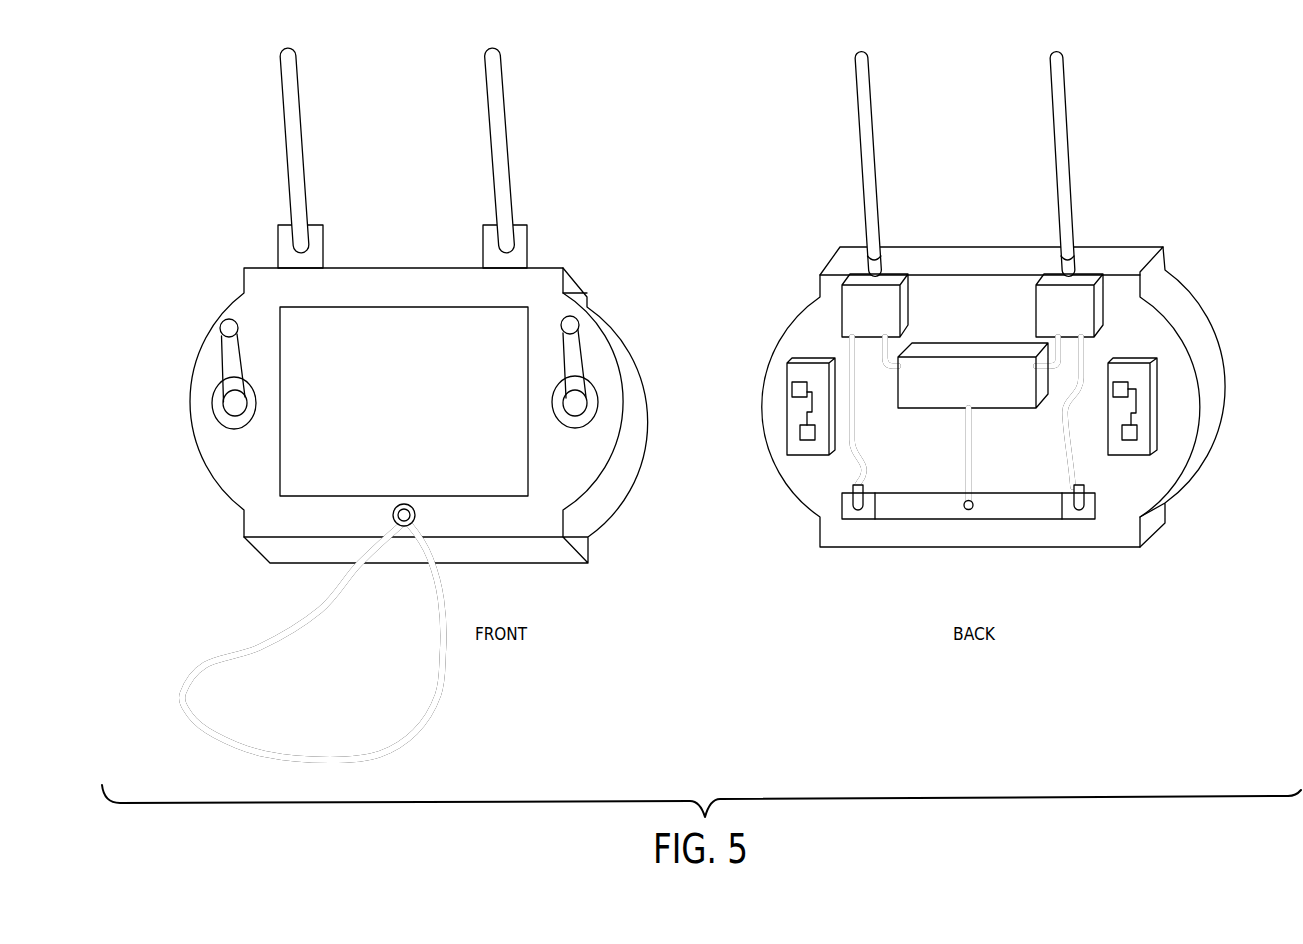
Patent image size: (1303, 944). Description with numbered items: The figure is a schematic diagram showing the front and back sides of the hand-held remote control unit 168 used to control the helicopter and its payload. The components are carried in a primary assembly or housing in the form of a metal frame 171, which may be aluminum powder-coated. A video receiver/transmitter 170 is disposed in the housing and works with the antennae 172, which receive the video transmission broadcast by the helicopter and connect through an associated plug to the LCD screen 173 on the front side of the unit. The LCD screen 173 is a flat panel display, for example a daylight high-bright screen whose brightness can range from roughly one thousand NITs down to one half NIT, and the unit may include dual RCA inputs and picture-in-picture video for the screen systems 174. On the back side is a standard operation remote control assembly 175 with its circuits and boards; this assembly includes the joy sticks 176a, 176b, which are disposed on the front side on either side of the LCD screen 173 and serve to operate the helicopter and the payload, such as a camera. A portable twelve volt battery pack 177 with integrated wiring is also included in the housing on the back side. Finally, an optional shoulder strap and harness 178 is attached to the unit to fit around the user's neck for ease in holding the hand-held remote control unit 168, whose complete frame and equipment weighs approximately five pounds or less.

The hand-held remote control unit 168 is at (715, 406).
The video receiver/transmitter 170 is at (848, 307).
The frame 171 is at (612, 495).
The antennae 172 is at (508, 157).
The LCD screen 173 is at (502, 333).
The screen systems 174 is at (920, 505).
The remote control assembly 175 is at (792, 425).
The joy stick 176a is at (222, 358).
The joy stick 176b is at (582, 350).
The battery pack 177 is at (944, 374).
The shoulder strap and harness 178 is at (285, 628).